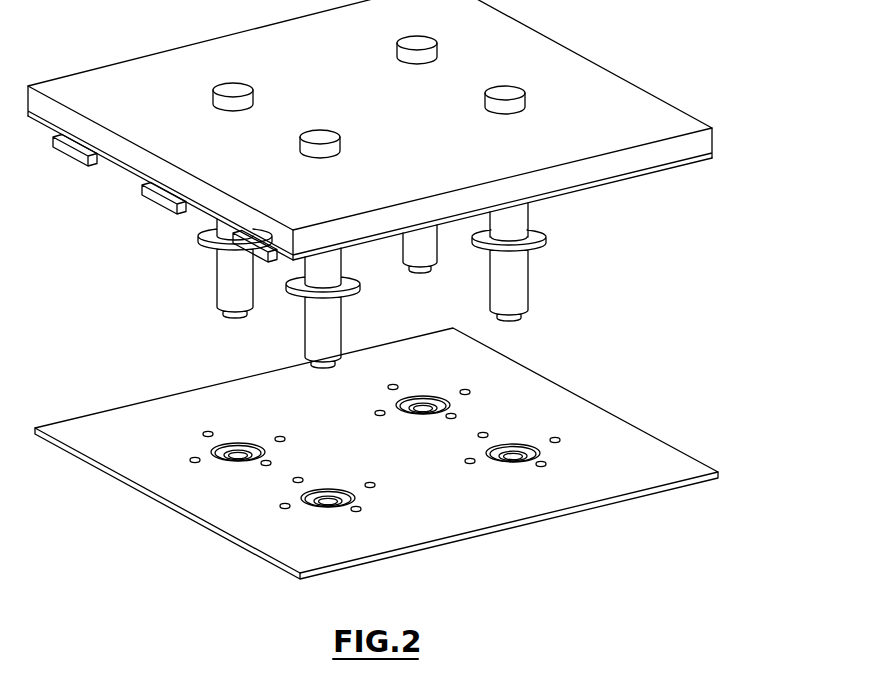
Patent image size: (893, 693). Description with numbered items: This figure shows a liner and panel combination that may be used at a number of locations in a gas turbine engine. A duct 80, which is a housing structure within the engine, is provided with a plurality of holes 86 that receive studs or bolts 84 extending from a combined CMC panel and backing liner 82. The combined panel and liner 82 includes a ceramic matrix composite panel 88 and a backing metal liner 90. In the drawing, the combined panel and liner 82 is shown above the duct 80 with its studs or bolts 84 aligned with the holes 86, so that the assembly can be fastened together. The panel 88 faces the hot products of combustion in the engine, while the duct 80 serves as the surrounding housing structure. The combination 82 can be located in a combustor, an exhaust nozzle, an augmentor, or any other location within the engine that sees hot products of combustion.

The duct 80 is at (652, 453).
The combined CMC panel and backing liner 82 is at (718, 78).
The studs or bolts 84 is at (230, 293).
The holes 86 is at (213, 452).
The ceramic matrix composite panel 88 is at (112, 86).
The backing metal liner 90 is at (113, 163).